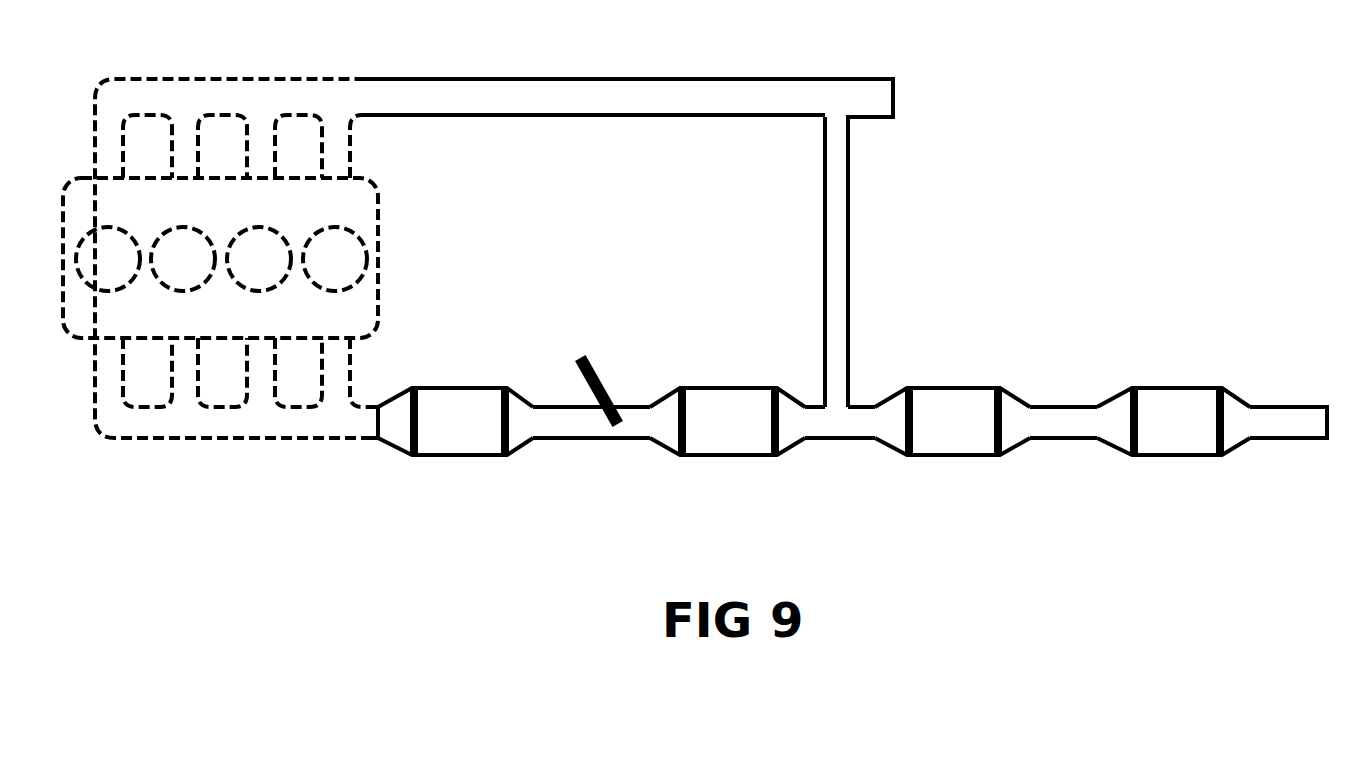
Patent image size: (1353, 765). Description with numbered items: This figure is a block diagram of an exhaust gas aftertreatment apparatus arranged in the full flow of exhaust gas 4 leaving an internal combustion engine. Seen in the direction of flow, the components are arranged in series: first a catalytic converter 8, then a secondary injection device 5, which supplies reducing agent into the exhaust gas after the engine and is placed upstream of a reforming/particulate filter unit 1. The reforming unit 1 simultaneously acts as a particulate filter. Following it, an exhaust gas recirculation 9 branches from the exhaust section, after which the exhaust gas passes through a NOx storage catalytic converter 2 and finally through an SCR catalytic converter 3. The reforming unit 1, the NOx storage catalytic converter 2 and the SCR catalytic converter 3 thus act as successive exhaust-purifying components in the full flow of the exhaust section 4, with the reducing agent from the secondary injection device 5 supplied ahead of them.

The reforming/particulate filter unit 1 is at (762, 421).
The NOx storage catalytic converter 2 is at (952, 421).
The SCR catalytic converter 3 is at (1212, 421).
The exhaust gas 4 is at (557, 415).
The secondary injection device 5 is at (602, 372).
The catalytic converter 8 is at (458, 420).
The exhaust gas recirculation 9 is at (835, 267).